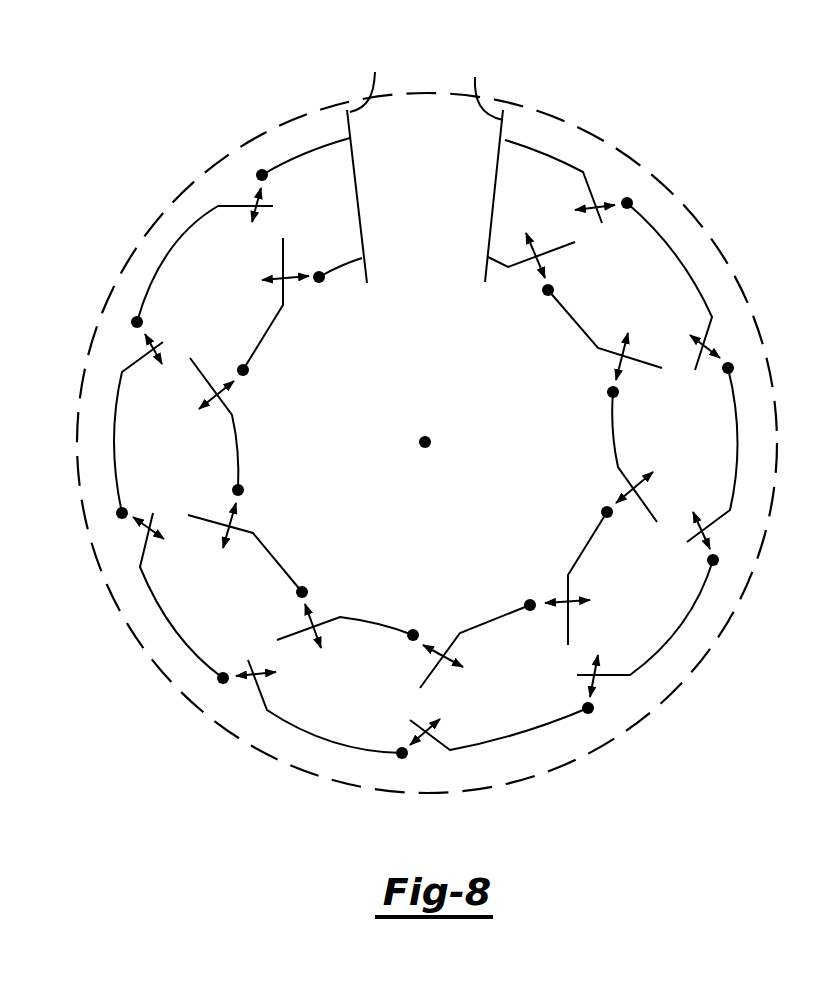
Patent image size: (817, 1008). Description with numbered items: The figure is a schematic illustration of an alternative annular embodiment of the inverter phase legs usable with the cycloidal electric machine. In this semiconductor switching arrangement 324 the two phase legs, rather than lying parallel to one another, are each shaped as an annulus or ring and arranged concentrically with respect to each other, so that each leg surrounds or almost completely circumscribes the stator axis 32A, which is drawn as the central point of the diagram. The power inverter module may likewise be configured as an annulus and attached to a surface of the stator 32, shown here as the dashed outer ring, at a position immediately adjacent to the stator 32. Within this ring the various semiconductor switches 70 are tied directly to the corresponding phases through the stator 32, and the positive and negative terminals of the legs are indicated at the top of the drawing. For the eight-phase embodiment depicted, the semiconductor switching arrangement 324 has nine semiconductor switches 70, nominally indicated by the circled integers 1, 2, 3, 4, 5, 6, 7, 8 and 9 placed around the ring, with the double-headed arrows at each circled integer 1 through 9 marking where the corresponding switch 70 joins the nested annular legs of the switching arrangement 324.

The semiconductor switching arrangement 324 is at (441, 399).
The stator 32 is at (697, 220).
The stator axis 32A is at (430, 440).
The semiconductor switch 70 is at (397, 603).
The first semiconductor switch 1 is at (246, 257).
The second semiconductor switch 2 is at (179, 419).
The third semiconductor switch 3 is at (220, 580).
The fourth semiconductor switch 4 is at (322, 681).
The fifth semiconductor switch 5 is at (487, 674).
The sixth semiconductor switch 6 is at (628, 601).
The seventh semiconductor switch 7 is at (672, 463).
The eighth semiconductor switch 8 is at (631, 300).
The ninth semiconductor switch 9 is at (552, 209).